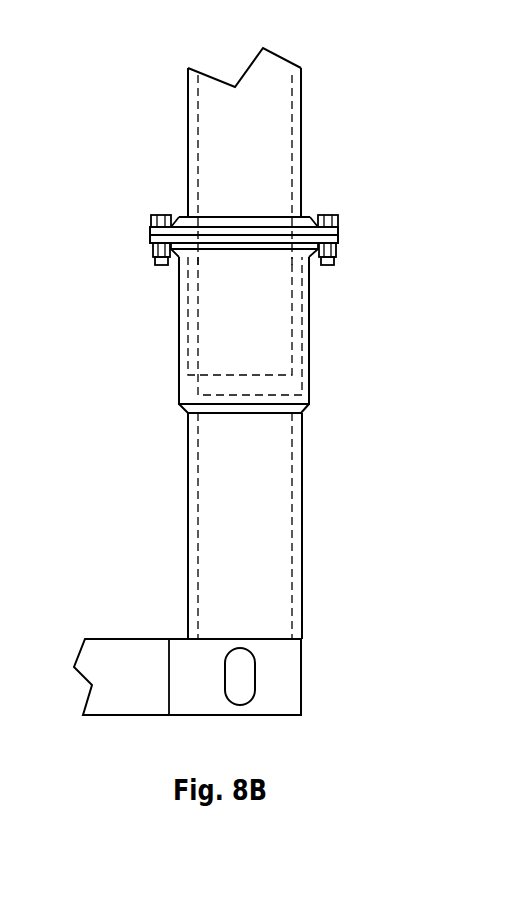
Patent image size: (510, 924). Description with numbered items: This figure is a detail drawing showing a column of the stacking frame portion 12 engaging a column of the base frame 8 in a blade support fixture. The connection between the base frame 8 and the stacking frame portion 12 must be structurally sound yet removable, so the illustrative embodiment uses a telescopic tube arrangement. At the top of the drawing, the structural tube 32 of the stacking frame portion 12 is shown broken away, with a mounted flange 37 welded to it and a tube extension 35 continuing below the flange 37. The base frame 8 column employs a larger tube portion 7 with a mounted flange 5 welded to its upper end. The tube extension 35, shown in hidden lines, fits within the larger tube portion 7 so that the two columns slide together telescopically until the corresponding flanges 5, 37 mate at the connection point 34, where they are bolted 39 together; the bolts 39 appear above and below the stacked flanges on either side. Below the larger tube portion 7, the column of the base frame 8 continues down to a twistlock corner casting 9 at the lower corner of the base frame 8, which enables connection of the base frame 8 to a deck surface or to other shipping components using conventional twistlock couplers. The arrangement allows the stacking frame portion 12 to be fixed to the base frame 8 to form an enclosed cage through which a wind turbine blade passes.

The stacking frame portion 12 is at (222, 77).
The structural tube 32 is at (301, 92).
The connection point 34 is at (118, 241).
The mounted flange 37 is at (338, 228).
The mounted flange 5 is at (338, 240).
The bolts 39 is at (158, 215).
The larger tube portion 7 is at (309, 317).
The tube extension 35 is at (208, 375).
The base frame 8 is at (302, 525).
The twistlock corner casting 9 is at (301, 663).